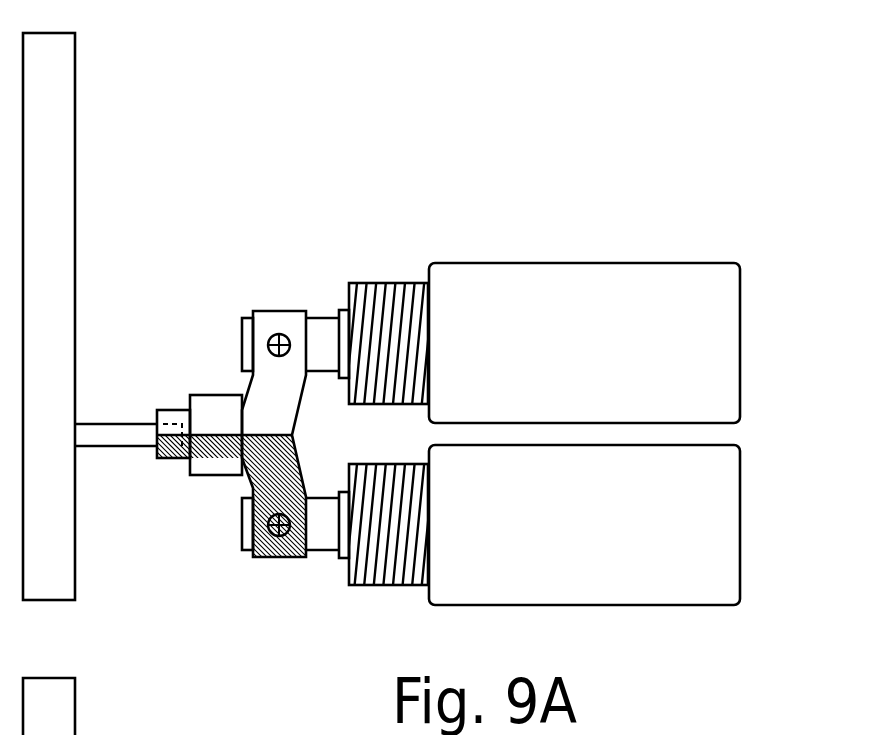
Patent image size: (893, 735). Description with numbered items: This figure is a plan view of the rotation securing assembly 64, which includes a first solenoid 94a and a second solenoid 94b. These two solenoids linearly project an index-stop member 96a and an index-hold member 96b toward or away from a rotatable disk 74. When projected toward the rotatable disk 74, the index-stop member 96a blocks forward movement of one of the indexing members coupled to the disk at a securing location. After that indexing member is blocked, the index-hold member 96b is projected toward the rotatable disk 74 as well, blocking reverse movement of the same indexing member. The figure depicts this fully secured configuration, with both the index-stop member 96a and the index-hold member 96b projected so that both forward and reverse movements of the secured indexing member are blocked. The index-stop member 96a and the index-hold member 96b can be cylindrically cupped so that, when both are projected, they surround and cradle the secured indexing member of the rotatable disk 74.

The rotatable disk 74 is at (75, 90).
The rotation securing assembly 64 is at (738, 163).
The first solenoid 94a is at (617, 536).
The second solenoid 94b is at (617, 347).
The index-stop member 96a is at (177, 458).
The index-hold member 96b is at (175, 410).